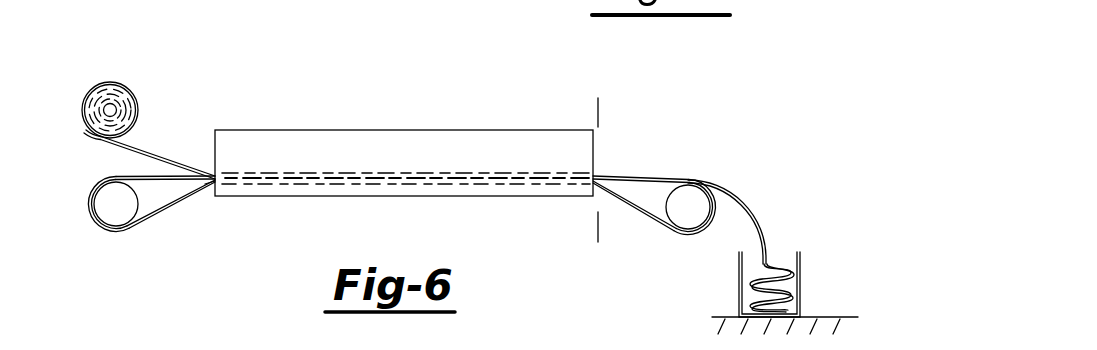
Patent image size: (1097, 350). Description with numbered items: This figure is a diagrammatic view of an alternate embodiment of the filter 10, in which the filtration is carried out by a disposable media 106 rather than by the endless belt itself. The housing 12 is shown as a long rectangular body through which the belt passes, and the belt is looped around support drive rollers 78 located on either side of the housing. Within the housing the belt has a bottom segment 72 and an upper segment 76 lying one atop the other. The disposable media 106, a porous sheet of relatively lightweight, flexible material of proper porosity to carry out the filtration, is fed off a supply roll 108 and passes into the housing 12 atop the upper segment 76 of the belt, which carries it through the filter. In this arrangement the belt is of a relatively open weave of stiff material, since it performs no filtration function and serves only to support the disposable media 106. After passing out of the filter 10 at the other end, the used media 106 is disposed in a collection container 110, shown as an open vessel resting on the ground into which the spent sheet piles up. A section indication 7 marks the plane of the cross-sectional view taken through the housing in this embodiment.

The section line 7- 7 is at (560, 108).
The filter 10 is at (177, 209).
The housing 12 is at (210, 141).
The bottom segment 72 is at (203, 190).
The upper segment 76 is at (148, 172).
The support drive rollers 78 is at (108, 212).
The disposable media 106 is at (166, 150).
The supply roll 108 is at (120, 80).
The collection container 110 is at (808, 272).